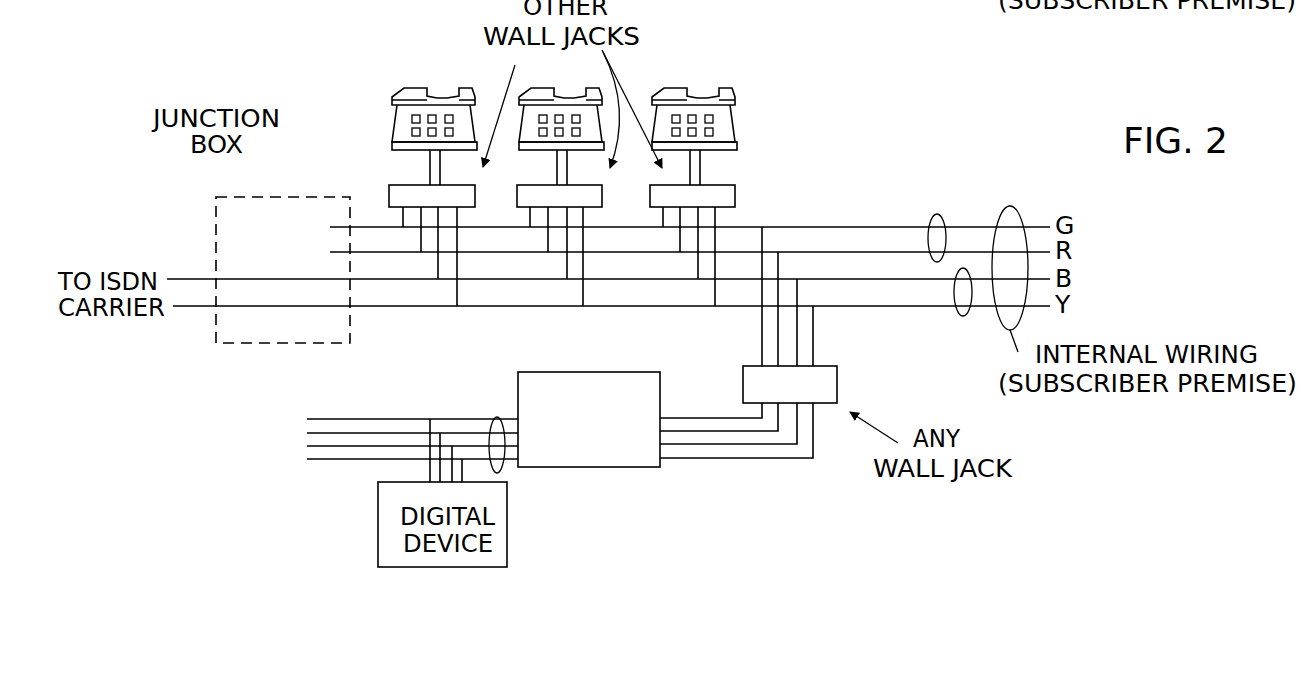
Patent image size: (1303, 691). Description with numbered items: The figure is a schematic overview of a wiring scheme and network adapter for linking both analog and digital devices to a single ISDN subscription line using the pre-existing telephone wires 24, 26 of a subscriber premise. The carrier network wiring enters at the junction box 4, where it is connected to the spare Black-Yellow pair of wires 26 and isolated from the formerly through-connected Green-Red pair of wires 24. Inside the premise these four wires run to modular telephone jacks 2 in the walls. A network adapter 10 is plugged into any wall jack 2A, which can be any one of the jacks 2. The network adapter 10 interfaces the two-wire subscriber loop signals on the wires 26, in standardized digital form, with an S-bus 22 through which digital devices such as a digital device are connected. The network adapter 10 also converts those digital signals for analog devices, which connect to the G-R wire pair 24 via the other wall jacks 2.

The modular telephone jacks 2 is at (390, 185).
The wall jack 2A is at (820, 373).
The junction box 4 is at (234, 196).
The network adapter 10 is at (555, 373).
The S-bus 22 is at (499, 418).
The Green-Red pair of wires 24 is at (931, 215).
The Black-Yellow pair of wires 26 is at (960, 316).